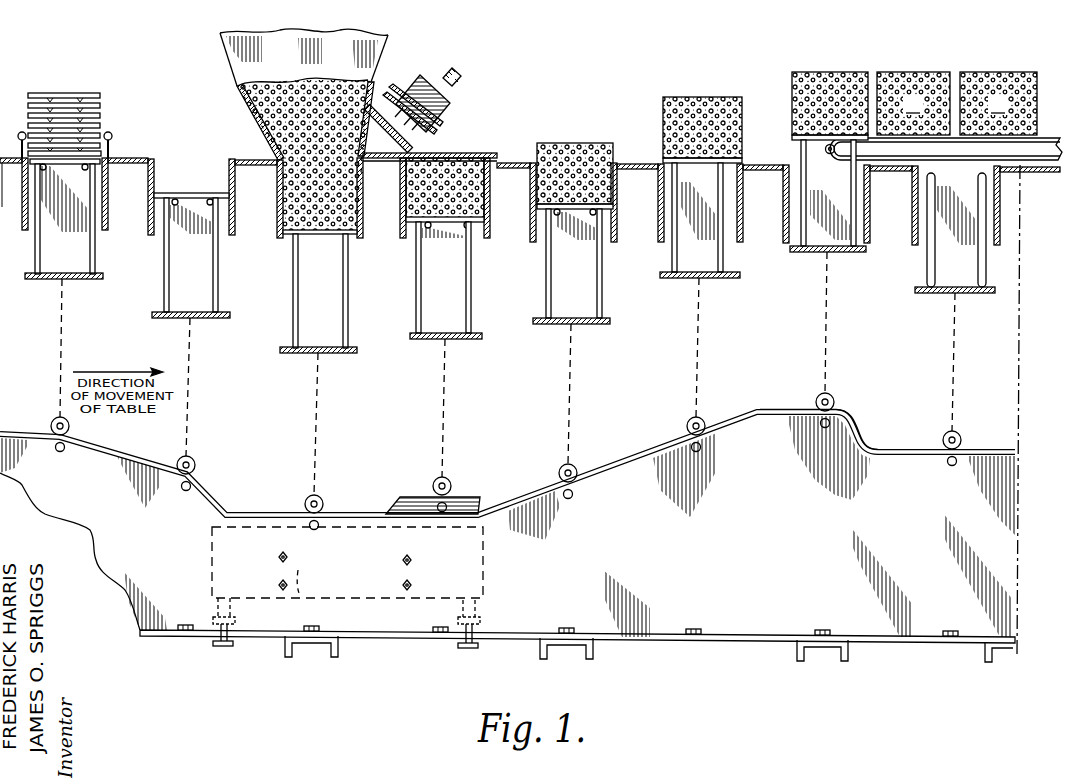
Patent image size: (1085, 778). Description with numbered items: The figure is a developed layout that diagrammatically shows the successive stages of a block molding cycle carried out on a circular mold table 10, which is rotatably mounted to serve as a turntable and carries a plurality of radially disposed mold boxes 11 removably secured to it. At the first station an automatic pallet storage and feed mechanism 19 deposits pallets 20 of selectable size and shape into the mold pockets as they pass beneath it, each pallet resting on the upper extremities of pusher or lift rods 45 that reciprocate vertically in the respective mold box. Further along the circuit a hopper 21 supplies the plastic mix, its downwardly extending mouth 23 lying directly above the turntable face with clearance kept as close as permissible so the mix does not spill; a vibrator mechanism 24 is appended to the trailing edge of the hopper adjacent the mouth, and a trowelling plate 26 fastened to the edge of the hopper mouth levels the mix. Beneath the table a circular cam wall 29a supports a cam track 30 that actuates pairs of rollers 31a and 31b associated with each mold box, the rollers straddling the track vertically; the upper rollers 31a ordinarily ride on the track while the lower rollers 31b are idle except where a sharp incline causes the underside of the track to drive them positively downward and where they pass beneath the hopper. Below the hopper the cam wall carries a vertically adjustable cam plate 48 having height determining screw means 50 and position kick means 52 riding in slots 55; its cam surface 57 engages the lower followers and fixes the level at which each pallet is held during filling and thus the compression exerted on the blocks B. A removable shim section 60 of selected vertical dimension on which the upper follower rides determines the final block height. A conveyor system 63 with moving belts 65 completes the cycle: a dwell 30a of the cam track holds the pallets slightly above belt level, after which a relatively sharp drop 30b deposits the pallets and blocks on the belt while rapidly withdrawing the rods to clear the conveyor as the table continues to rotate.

The circular mold table 10 is at (630, 164).
The mold boxes 11 is at (150, 197).
The pallet storage and feed mechanism 19 is at (116, 96).
The pallets 20 is at (101, 120).
The hopper 21 is at (248, 69).
The hopper mouth 23 is at (236, 157).
The vibrator mechanism 24 is at (416, 88).
The trowelling plate 26 is at (392, 153).
The pusher or lift rods 45 is at (84, 263).
The conveyor system 63 is at (1041, 98).
The moving belts 65 is at (1037, 163).
The circular cam wall 29a is at (807, 586).
The cam track 30 is at (642, 456).
The cam track dwell 30a is at (788, 411).
The sharp drop of cam track 30b is at (915, 419).
The upper rollers 31a is at (563, 472).
The lower rollers 31b is at (379, 497).
The removable section or shim 60 is at (497, 471).
The cam surface 57 is at (212, 525).
The cam plate 48 is at (355, 582).
The position kick means 52 is at (411, 560).
The slots 55 is at (412, 563).
The height determining screw means 50 is at (233, 607).
The blocks B is at (566, 181).